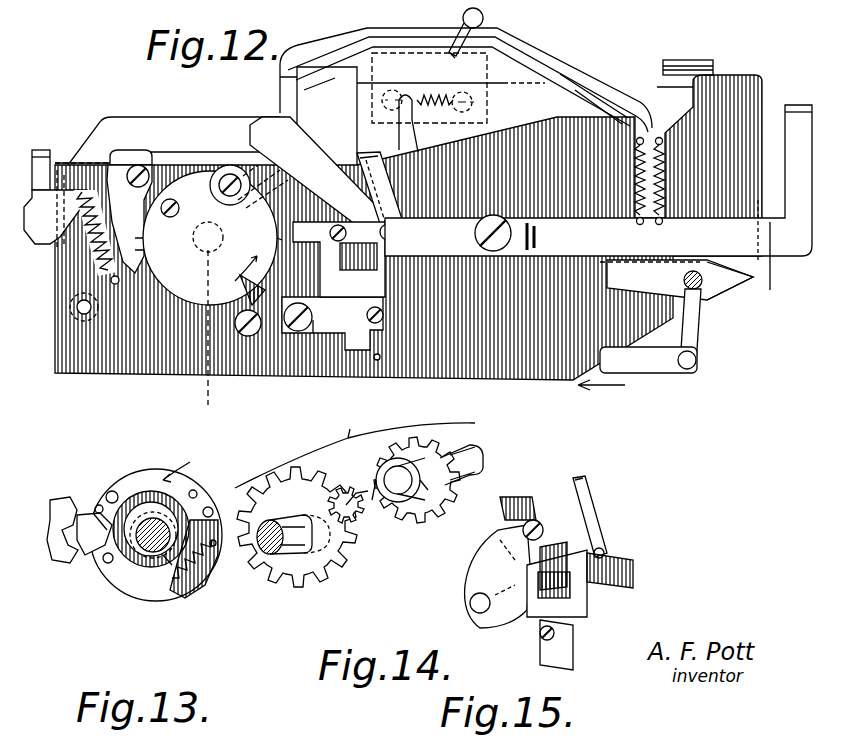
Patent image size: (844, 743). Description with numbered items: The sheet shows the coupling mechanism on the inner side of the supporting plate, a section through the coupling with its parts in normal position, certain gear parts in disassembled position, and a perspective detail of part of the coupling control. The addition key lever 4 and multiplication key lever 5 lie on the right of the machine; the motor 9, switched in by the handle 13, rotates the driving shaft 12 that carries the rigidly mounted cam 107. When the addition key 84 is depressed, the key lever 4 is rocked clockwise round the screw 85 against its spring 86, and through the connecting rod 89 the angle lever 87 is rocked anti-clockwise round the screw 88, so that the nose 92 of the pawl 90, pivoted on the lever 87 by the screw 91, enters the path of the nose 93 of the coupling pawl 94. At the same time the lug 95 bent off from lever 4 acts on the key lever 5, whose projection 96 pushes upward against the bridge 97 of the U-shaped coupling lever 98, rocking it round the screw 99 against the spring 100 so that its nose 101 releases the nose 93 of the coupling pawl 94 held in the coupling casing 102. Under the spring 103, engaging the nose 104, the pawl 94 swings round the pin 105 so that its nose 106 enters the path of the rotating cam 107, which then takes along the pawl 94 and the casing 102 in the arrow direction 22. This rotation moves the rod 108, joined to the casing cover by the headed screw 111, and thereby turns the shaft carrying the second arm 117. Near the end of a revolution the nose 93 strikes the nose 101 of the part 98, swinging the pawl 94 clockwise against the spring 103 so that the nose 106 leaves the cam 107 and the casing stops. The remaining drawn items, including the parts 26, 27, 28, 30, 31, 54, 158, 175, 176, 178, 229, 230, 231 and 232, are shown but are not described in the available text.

In FIG. 12, the addition key lever 4 is at (753, 280).
In FIG. 15, the addition key lever 4 is at (625, 556).
In FIG. 12, the multiplication key lever 5 is at (298, 155).
In FIG. 12, the motor 9 is at (280, 76).
In FIG. 12, the driving shaft 12 is at (210, 298).
In FIG. 13, the driving shaft 12 is at (165, 525).
In FIG. 12, the handle 13 is at (463, 18).
In FIG. 12, the arrow direction 22 is at (234, 268).
In FIG. 13, the arrow direction 22 is at (183, 455).
In FIG. 14, the hub 26 is at (405, 503).
In FIG. 12, the frame body 27 is at (80, 358).
In FIG. 14, the gear 28 is at (432, 510).
In FIG. 14, the gear 30 is at (292, 552).
In FIG. 12, the pinion 31 is at (630, 0).
In FIG. 14, the pinion 31 is at (390, 496).
In FIG. 12, the direction arrow 54 is at (588, 390).
In FIG. 12, the addition key 84 is at (803, 105).
In FIG. 12, the screw 85 is at (512, 236).
In FIG. 12, the spring 86 is at (660, 137).
In FIG. 12, the angle lever 87 is at (340, 318).
In FIG. 15, the angle lever 87 is at (475, 585).
In FIG. 12, the screw 88 is at (298, 332).
In FIG. 12, the connecting rod 89 is at (362, 178).
In FIG. 15, the connecting rod 89 is at (570, 530).
In FIG. 12, the pawl 90 is at (386, 250).
In FIG. 15, the pawl 90 is at (578, 610).
In FIG. 15, the screw 91 is at (533, 520).
In FIG. 12, the nose 92 is at (282, 240).
In FIG. 15, the nose 92 is at (508, 497).
In FIG. 12, the nose 93 is at (140, 240).
In FIG. 13, the nose 93 is at (90, 515).
In FIG. 13, the coupling pawl 94 is at (133, 585).
In FIG. 12, the lug 95 is at (778, 264).
In FIG. 12, the projection 96 is at (58, 165).
In FIG. 12, the bridge 97 is at (42, 150).
In FIG. 12, the coupling lever 98 is at (162, 202).
In FIG. 13, the coupling lever 98 is at (58, 545).
In FIG. 12, the screw 99 is at (137, 165).
In FIG. 12, the spring 100 is at (93, 238).
In FIG. 12, the nose 101 is at (140, 212).
In FIG. 13, the nose 101 is at (80, 510).
In FIG. 12, the coupling casing 102 is at (246, 338).
In FIG. 13, the spring 103 is at (200, 580).
In FIG. 13, the nose 104 is at (178, 600).
In FIG. 13, the pin 105 is at (106, 563).
In FIG. 13, the nose 106 is at (167, 560).
In FIG. 13, the cam 107 is at (153, 492).
In FIG. 12, the rod 108 is at (272, 170).
In FIG. 12, the headed screw 111 is at (228, 174).
In FIG. 12, the second arm 117 is at (640, 137).
In FIG. 12, the arm end 158 is at (376, 152).
In FIG. 15, the arm end 158 is at (582, 477).
In FIG. 15, the foot 175 is at (563, 655).
In FIG. 12, the screw 176 is at (378, 324).
In FIG. 12, the hook 178 is at (55, 247).
In FIG. 12, the lever 229 is at (617, 264).
In FIG. 12, the pivot 230 is at (697, 362).
In FIG. 12, the link 231 is at (708, 292).
In FIG. 12, the link 232 is at (660, 374).